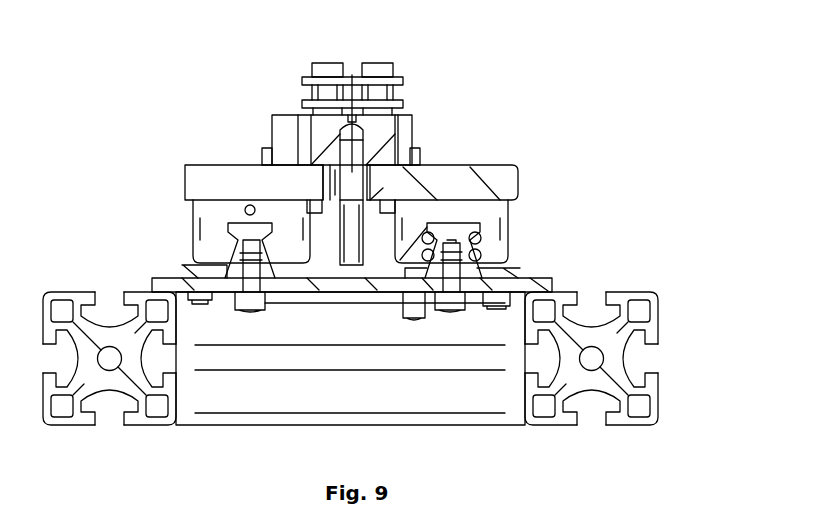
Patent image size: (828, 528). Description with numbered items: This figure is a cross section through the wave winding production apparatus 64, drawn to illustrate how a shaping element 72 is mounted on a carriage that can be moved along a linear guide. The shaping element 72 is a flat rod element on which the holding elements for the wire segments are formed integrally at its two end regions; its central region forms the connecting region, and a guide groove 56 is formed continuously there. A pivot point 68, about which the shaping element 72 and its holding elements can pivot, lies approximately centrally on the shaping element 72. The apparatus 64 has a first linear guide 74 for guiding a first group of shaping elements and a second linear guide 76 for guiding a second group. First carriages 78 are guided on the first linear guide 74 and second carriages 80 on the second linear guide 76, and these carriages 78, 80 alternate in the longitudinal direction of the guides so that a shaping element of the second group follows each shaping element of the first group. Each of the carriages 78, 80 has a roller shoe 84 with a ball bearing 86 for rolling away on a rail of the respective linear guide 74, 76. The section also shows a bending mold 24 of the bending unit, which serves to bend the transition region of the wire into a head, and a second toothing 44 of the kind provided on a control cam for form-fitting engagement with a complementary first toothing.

The bending mold 24 is at (285, 133).
The second toothing 44 is at (261, 158).
The guide groove 56 is at (347, 122).
The wave winding production apparatus 64 is at (381, 176).
The pivot point 68 is at (357, 150).
The shaping element 72 is at (384, 150).
The first linear guide 74 is at (240, 238).
The second linear guide 76 is at (462, 233).
The first carriage 78 is at (222, 172).
The second carriage 80 is at (463, 177).
The roller shoe 84 is at (192, 215).
The ball bearing 86 is at (486, 251).